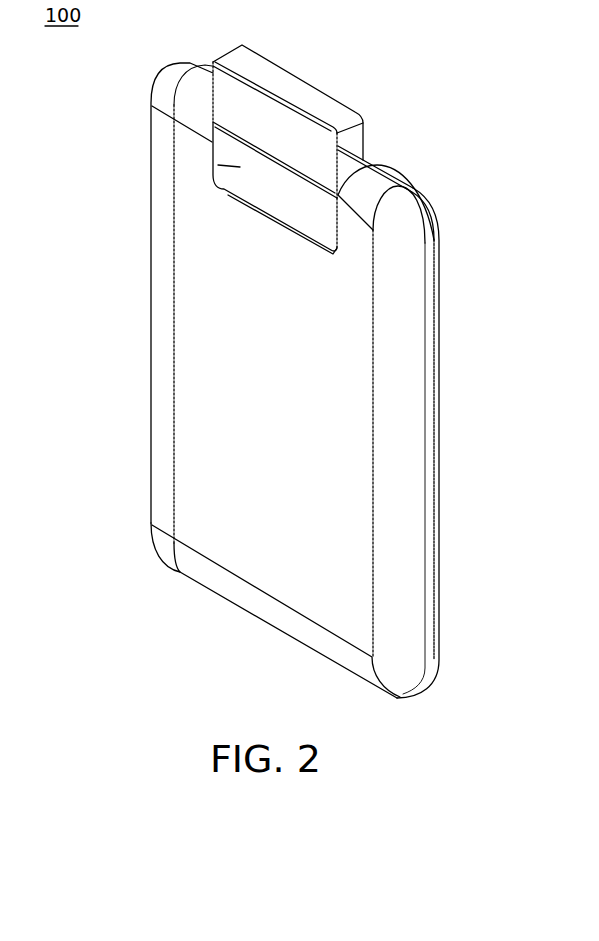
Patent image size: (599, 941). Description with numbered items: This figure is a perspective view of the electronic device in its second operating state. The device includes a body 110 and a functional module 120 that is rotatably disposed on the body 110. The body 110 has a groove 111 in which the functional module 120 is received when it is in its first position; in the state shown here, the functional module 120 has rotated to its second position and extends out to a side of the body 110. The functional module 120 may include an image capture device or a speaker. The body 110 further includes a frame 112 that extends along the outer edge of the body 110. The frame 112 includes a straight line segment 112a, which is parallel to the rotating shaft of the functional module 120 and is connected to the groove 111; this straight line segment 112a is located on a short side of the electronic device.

The body 110 is at (162, 269).
The groove 111 is at (228, 153).
The frame 112 is at (432, 308).
The straight line segment 112a is at (378, 178).
The functional module 120 is at (237, 102).